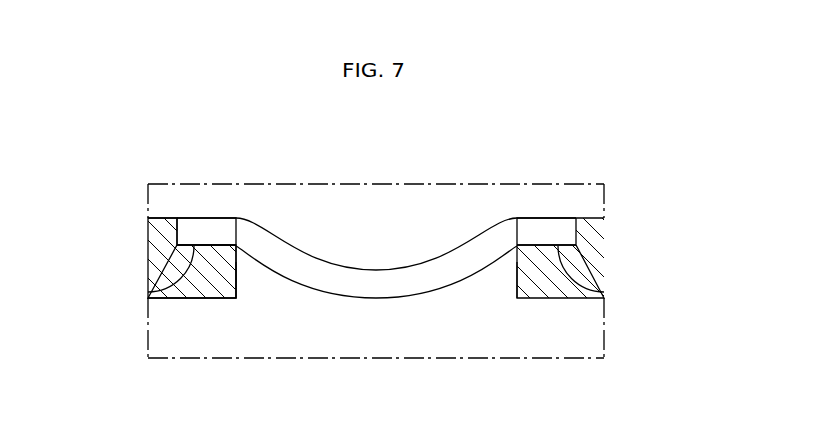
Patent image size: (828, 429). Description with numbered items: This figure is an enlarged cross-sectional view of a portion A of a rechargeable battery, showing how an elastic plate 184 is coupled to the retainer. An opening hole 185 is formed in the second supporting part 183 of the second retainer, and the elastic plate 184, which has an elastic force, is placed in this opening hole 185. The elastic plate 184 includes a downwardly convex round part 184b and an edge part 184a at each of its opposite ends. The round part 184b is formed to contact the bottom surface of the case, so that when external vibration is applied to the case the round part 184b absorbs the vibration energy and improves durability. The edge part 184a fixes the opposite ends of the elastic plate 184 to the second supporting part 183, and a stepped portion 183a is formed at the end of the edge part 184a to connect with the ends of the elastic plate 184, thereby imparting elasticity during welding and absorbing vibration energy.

The portion A is at (133, 172).
The second supporting part 183 is at (163, 262).
The stepped portion 183a is at (162, 296).
The elastic plate 184 is at (379, 273).
The edge part 184a is at (195, 218).
The round part 184b is at (376, 276).
The opening hole 185 is at (236, 283).